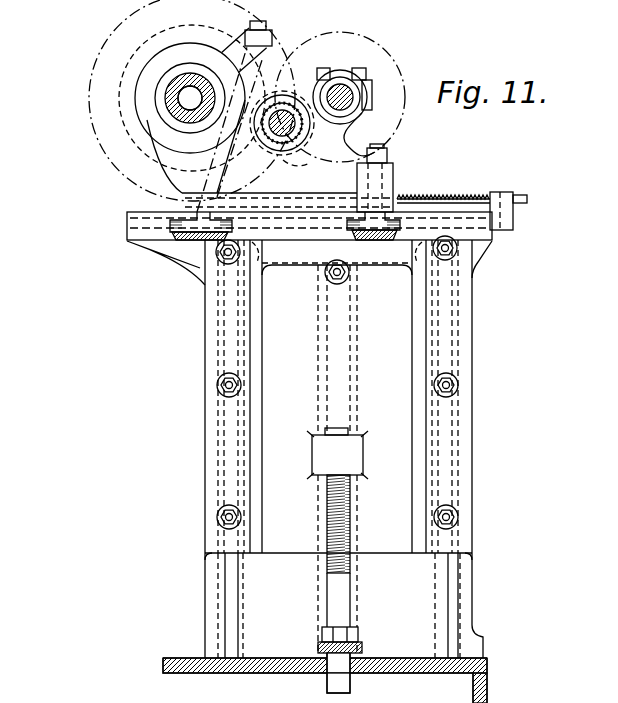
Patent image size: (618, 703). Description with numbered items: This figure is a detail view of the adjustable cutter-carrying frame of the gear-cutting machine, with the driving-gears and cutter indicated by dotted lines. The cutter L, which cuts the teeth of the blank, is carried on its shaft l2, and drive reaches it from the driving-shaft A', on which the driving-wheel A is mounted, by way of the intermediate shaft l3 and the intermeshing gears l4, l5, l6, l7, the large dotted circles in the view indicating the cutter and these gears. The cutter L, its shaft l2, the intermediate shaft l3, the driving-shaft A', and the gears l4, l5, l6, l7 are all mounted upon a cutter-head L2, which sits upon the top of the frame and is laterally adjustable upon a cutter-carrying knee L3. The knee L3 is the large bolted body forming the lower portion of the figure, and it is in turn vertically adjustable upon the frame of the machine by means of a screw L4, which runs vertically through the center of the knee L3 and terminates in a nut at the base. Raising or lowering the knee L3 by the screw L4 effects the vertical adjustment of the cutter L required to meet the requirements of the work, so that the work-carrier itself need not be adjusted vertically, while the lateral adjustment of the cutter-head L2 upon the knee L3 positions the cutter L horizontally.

The cutter L is at (90, 90).
The intermeshing gear l4 is at (120, 112).
The cutter shaft l2 is at (170, 110).
The intermeshing gear l5 is at (277, 143).
The intermediate shaft l3 is at (283, 135).
The intermeshing gear l6 is at (305, 161).
The intermeshing gear l7 is at (352, 122).
The driving-shaft A' is at (344, 67).
The driving-wheel A is at (344, 97).
The cutter-head L2 is at (388, 176).
The cutter-carrying knee L3 is at (325, 469).
The screw L4 is at (340, 598).